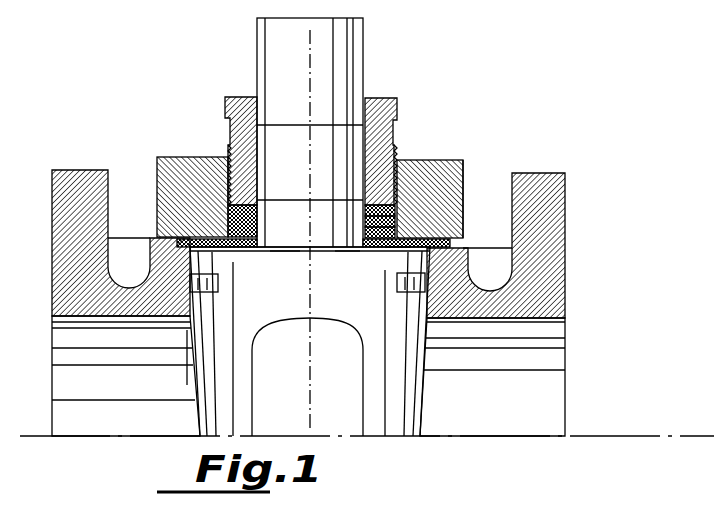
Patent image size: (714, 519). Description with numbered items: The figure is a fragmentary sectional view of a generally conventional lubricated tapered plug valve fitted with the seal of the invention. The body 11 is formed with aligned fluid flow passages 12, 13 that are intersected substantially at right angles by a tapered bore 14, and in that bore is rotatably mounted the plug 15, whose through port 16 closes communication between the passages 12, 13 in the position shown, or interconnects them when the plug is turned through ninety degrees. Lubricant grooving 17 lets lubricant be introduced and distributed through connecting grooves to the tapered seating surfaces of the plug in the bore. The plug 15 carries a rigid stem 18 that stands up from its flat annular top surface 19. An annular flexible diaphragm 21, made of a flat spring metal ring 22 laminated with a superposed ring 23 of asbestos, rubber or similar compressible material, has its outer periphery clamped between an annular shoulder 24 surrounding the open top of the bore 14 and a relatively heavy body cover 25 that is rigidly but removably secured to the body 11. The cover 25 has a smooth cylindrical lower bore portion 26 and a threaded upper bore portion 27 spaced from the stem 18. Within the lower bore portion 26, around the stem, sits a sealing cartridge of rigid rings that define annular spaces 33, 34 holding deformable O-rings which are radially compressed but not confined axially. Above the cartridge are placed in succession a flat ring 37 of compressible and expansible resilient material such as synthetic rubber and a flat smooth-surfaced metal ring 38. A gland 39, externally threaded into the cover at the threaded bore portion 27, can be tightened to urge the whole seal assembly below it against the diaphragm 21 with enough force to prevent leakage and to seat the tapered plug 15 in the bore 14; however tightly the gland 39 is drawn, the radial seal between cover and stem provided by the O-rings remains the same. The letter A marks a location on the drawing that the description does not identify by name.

The body 11 is at (568, 280).
The fluid flow passage 12 is at (567, 325).
The fluid flow passage 13 is at (62, 320).
The tapered bore 14 is at (424, 312).
The plug 15 is at (420, 389).
The through port 16 is at (262, 392).
The lubricant grooving 17 is at (218, 284).
The stem 18 is at (355, 57).
The flat annular top surface 19 is at (287, 251).
The annular flexible diaphragm 21 is at (396, 250).
The flat spring metal ring 22 is at (423, 247).
The compressible ring 23 is at (394, 230).
The annular shoulder 24 is at (427, 283).
The body cover 25 is at (446, 160).
The cylindrical lower bore portion 26 is at (350, 250).
The threaded upper bore portion 27 is at (400, 172).
The annular space 33 is at (192, 198).
The annular space 34 is at (258, 238).
The flat ring 37 is at (393, 218).
The metal ring 38 is at (393, 207).
The gland 39 is at (385, 99).
The dimension A is at (186, 371).